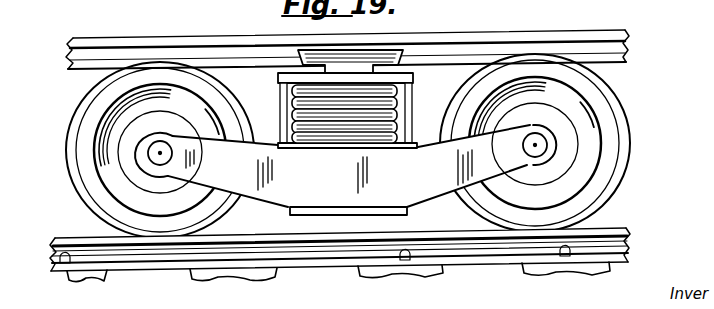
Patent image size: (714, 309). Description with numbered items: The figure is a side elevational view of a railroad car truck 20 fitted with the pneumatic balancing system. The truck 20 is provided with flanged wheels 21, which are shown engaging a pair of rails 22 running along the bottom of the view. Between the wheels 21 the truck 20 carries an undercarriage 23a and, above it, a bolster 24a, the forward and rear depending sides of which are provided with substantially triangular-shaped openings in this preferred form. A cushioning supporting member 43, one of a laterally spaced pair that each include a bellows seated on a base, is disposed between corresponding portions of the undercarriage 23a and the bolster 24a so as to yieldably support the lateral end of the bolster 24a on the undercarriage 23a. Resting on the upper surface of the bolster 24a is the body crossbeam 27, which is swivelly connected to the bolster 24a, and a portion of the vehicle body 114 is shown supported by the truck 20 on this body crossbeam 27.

The truck 20 is at (433, 199).
The flanged wheels 21 is at (88, 180).
The rails 22 is at (190, 8).
The bolster beam 23a is at (328, 187).
The bolster 24a is at (279, 101).
The body crossbeam 27 is at (286, 50).
The cushioning supporting member 43 is at (398, 113).
The vehicle body 114 is at (510, 24).